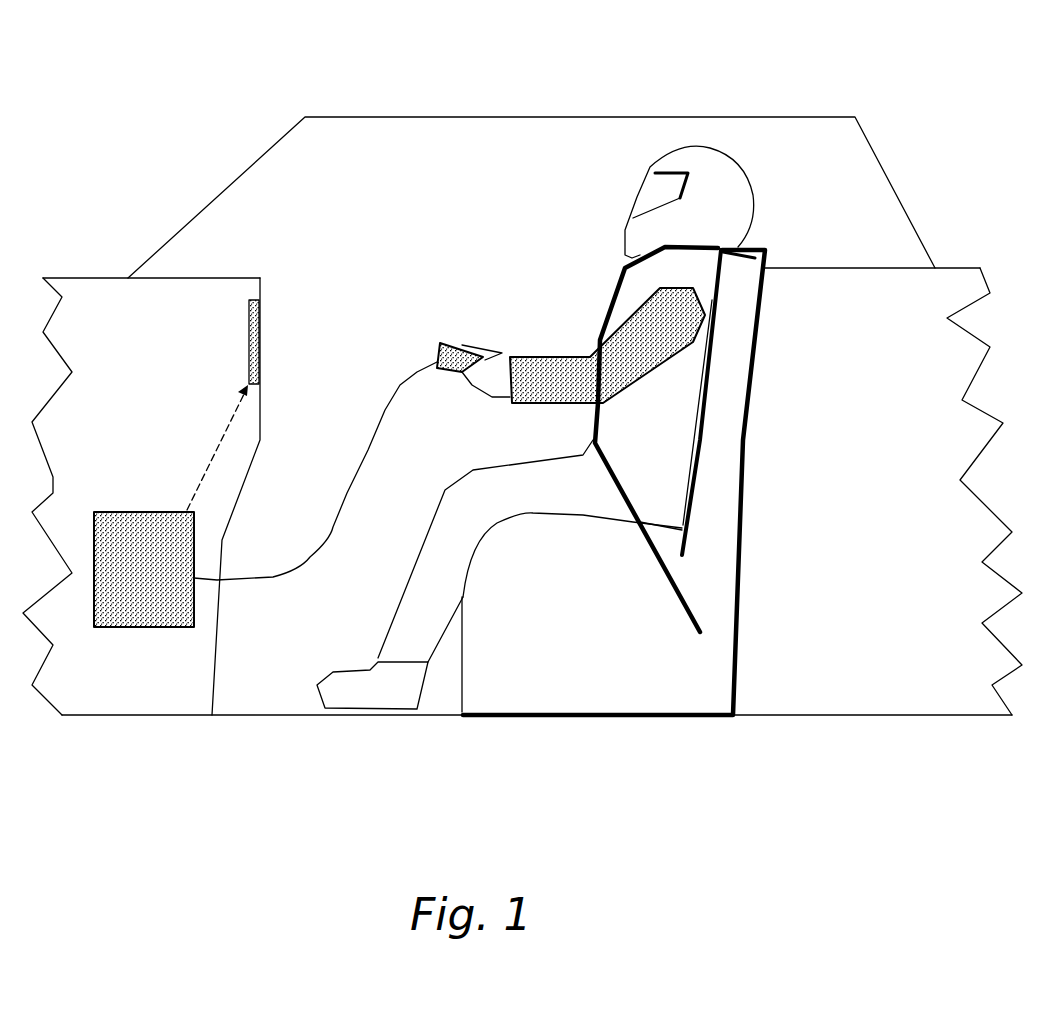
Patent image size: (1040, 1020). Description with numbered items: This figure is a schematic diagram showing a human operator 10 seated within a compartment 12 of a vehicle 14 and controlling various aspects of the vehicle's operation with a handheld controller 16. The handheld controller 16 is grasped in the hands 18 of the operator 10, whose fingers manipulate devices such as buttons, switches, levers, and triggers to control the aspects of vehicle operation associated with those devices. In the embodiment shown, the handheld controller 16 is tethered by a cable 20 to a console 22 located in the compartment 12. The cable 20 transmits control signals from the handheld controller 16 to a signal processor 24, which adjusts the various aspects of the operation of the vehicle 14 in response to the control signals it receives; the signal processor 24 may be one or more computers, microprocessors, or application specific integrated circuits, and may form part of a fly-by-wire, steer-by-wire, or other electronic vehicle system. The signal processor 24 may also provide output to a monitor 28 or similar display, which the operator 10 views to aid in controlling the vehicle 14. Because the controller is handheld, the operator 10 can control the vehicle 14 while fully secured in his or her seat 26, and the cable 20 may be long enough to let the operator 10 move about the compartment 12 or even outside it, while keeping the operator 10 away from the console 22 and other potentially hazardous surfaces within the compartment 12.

The human operator 10 is at (730, 205).
The compartment 12 is at (468, 212).
The vehicle 14 is at (708, 110).
The handheld controller 16 is at (450, 340).
The hands 18 is at (478, 377).
The cable 20 is at (372, 426).
The console 22 is at (215, 298).
The signal processor 24 is at (125, 535).
The seat 26 is at (725, 482).
The monitor 28 is at (253, 337).